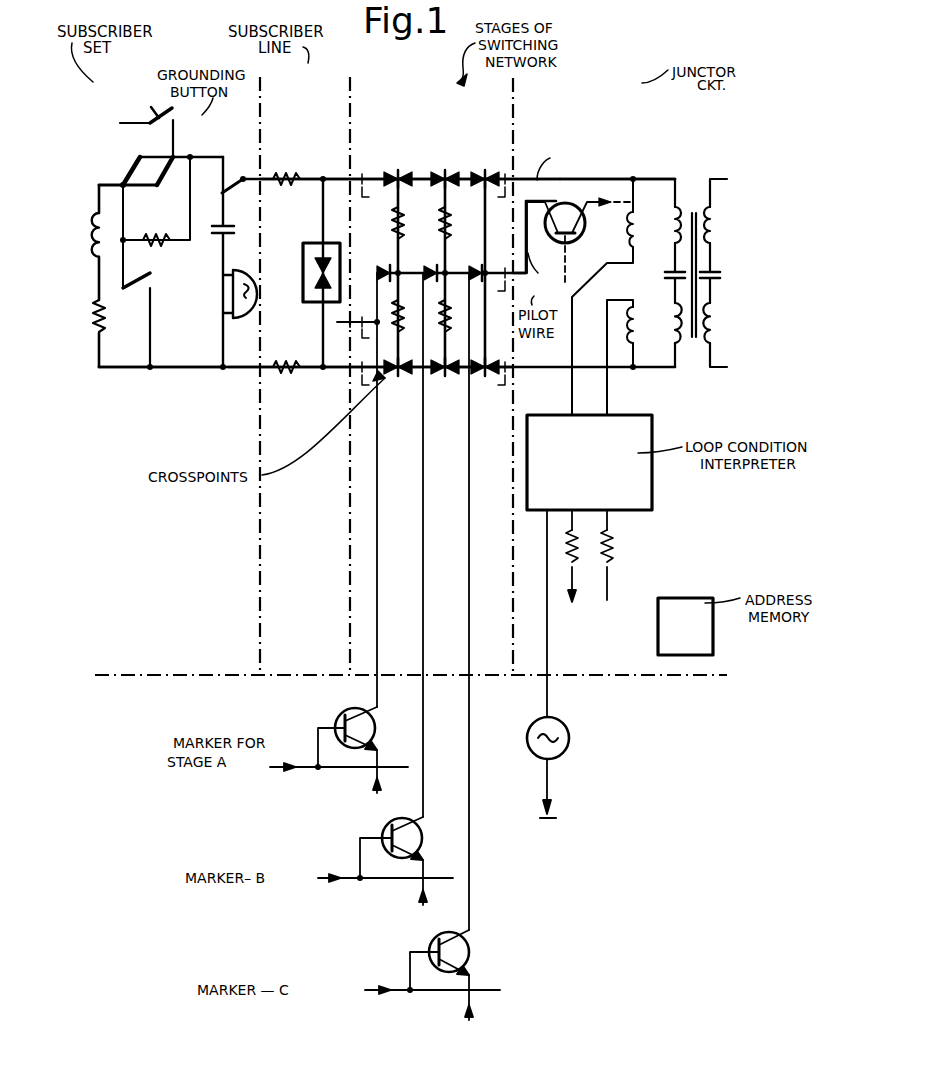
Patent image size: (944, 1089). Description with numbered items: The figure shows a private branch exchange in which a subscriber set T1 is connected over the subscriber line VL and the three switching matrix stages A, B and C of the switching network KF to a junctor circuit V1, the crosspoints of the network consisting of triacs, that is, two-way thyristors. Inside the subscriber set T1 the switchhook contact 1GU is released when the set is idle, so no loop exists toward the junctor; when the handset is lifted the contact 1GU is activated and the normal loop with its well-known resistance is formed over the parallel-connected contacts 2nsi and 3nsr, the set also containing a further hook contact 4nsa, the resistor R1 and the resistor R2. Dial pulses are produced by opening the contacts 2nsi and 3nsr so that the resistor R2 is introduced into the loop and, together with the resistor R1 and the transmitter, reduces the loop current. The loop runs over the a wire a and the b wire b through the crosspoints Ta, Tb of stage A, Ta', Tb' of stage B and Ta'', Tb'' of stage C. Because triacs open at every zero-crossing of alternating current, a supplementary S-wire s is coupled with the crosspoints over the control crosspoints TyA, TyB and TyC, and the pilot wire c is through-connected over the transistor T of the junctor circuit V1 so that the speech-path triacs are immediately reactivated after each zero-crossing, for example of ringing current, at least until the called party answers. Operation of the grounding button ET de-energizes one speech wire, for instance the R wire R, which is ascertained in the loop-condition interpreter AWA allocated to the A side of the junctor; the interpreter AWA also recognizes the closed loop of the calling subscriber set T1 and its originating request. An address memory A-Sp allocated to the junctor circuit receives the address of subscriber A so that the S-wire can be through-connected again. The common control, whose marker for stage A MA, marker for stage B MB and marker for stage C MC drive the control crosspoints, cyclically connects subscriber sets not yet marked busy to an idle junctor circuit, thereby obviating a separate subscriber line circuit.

The subscriber set T1 is at (112, 215).
The resistor R1 is at (109, 316).
The resistor R2 is at (163, 253).
The contact 3nsr is at (154, 169).
The contact 2nsi is at (166, 178).
The contact 4nsa is at (152, 271).
The grounding button ET is at (151, 130).
The switchhook contact 1GU is at (225, 263).
The a-wire a is at (237, 172).
The b-wire b is at (244, 354).
The R-wire R is at (178, 370).
The subscriber line VL is at (305, 215).
The switching network KF is at (431, 215).
The crosspoint Ta is at (398, 165).
The crosspoint Ta' is at (445, 165).
The crosspoint Ta'' is at (487, 165).
The crosspoint Tb is at (398, 383).
The crosspoint Tb' is at (444, 383).
The crosspoint Tb'' is at (488, 383).
The control crosspoint TyA is at (372, 472).
The control crosspoint TyB is at (421, 527).
The control crosspoint TyC is at (469, 583).
The S-wire s is at (536, 163).
The C-wire c is at (526, 284).
The junctor circuit V1 is at (617, 122).
The transistor T is at (578, 240).
The loop-condition interpreter AWA is at (589, 517).
The address memory A-Sp is at (685, 626).
The marker for stage A MA is at (339, 739).
The marker for stage B MB is at (385, 845).
The marker for stage C MC is at (432, 959).